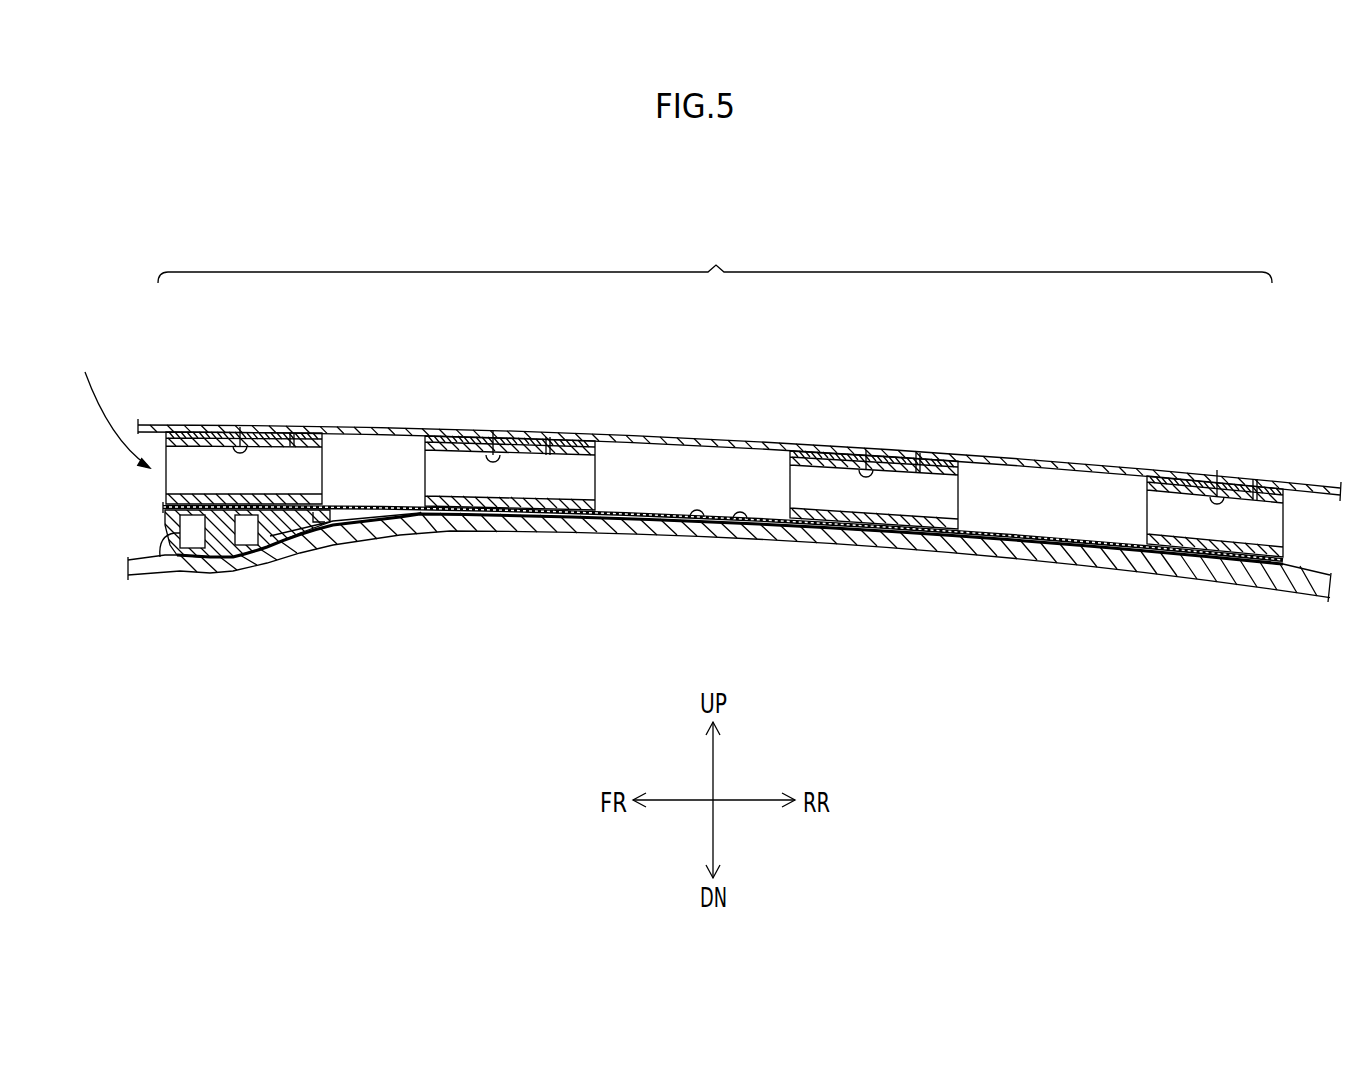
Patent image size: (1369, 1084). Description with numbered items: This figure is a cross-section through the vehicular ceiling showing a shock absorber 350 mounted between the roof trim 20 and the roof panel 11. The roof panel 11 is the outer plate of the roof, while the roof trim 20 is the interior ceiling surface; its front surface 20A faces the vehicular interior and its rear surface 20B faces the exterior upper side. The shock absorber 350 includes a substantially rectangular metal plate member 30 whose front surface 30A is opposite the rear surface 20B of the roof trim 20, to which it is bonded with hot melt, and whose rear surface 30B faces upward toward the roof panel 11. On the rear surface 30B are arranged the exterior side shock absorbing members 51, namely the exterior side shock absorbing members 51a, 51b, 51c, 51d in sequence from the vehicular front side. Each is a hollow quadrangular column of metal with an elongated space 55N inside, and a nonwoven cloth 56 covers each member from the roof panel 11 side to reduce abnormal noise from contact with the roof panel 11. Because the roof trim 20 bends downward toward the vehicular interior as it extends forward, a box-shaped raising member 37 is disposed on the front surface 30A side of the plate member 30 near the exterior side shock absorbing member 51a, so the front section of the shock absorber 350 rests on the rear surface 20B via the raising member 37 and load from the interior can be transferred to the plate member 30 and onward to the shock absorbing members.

The roof panel 11 is at (680, 437).
The exterior side shock absorbing members 51 is at (715, 258).
The exterior side shock absorbing member 51a is at (218, 432).
The exterior side shock absorbing member 51b is at (470, 436).
The exterior side shock absorbing member 51c is at (838, 451).
The exterior side shock absorbing member 51d is at (1188, 479).
The elongated space 55N is at (1217, 497).
The nonwoven cloth 56 is at (1255, 482).
The shock absorber 350 is at (105, 370).
The roof trim 20 is at (665, 535).
The front surface 20A is at (343, 537).
The rear surface 20B is at (129, 562).
The raising member 37 is at (152, 562).
The plate member 30 is at (704, 517).
The front surface 30A is at (313, 516).
The rear surface 30B is at (742, 520).